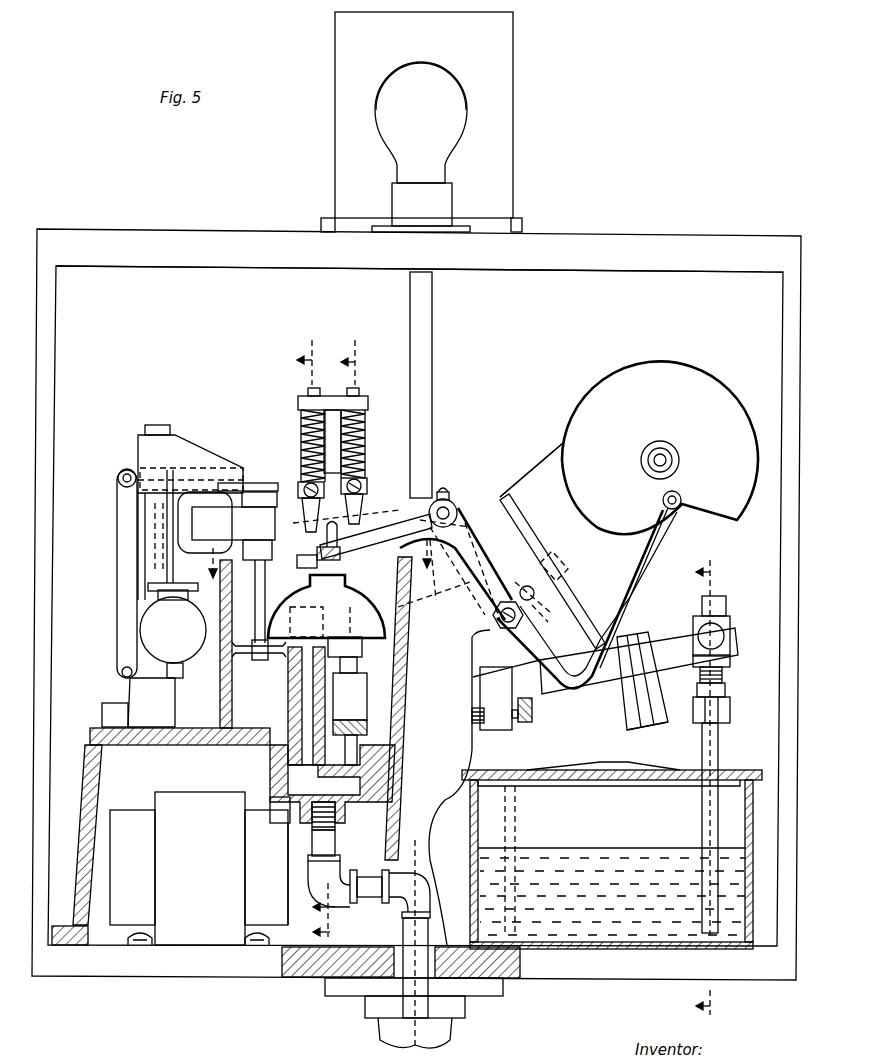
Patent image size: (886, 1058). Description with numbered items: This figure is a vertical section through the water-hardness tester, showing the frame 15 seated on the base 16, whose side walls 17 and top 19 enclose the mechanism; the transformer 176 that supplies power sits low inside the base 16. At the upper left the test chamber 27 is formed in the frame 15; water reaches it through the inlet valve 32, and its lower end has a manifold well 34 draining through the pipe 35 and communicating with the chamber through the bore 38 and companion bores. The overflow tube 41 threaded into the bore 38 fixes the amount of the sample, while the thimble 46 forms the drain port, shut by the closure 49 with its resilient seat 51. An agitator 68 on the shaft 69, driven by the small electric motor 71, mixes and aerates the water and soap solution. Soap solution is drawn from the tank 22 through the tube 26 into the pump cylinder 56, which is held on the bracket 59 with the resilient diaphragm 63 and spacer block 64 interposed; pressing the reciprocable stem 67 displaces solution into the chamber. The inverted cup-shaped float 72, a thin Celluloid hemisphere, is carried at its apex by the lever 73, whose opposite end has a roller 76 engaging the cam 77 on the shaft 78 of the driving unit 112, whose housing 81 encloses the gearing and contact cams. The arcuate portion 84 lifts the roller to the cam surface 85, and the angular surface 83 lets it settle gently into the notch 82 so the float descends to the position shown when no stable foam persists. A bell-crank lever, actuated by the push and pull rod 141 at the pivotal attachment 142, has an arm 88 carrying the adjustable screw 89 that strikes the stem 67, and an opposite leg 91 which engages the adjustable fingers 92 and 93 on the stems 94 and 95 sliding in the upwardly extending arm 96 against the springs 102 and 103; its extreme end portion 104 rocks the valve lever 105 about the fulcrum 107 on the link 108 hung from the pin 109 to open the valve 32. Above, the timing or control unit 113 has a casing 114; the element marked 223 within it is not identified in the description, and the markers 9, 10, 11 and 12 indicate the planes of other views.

The section line 9- 9 is at (714, 789).
The section line 10- 10 is at (325, 638).
The section line 11- 11 is at (345, 642).
The section line 12- 12 is at (323, 559).
The frame 15 is at (405, 778).
The base 16 is at (233, 970).
The side walls 17 is at (48, 363).
The top 19 is at (675, 245).
The tank 22 is at (603, 928).
The tube 26 is at (720, 745).
The test chamber 27 is at (243, 644).
The valve 32 is at (173, 574).
The manifold well 34 is at (348, 790).
The pipe 35 is at (402, 1043).
The internally threaded bore 38 is at (295, 778).
The overflow tube 41 is at (290, 678).
The thimble 46 is at (380, 762).
The closure 49 is at (347, 678).
The resilient seat 51 is at (362, 722).
The pump cylinder 56 is at (697, 659).
The bracket 59 is at (600, 700).
The resilient diaphragm 63 is at (635, 640).
The spacer block 64 is at (643, 725).
The reciprocable stem 67 is at (530, 718).
The agitator 68 is at (259, 664).
The shaft 69 is at (256, 620).
The electric motor 71 is at (245, 515).
The float 72 is at (386, 630).
The lever 73 is at (450, 525).
The roller 76 is at (682, 500).
The cam 77 is at (660, 447).
The shaft 78 is at (662, 458).
The housing 81 is at (552, 546).
The notch 82 is at (675, 496).
The angularly disposed surface 83 is at (700, 518).
The arcuate portion 84 is at (630, 525).
The cam surface 85 is at (697, 378).
The arm 88 is at (470, 787).
The adjustable screw 89 is at (512, 722).
The leg 91 is at (375, 514).
The adjustable finger 92 is at (319, 493).
The adjustable finger 93 is at (370, 490).
The stem 94 is at (310, 390).
The stem 95 is at (358, 392).
The upwardly extending arm 96 is at (332, 430).
The spring 102 is at (305, 420).
The spring 103 is at (368, 422).
The extreme end portion 104 is at (277, 487).
The valve lever 105 is at (262, 482).
The fulcrum 107 is at (120, 473).
The link 108 is at (118, 545).
The pin 109 is at (118, 690).
The driving unit 112 is at (533, 470).
The control unit 113 is at (520, 96).
The casing 114 is at (421, 129).
The push and pull rod 141 is at (557, 556).
The pivotal attachment 142 is at (535, 605).
The transformer 176 is at (171, 836).
The lamp bulb 223 is at (421, 89).